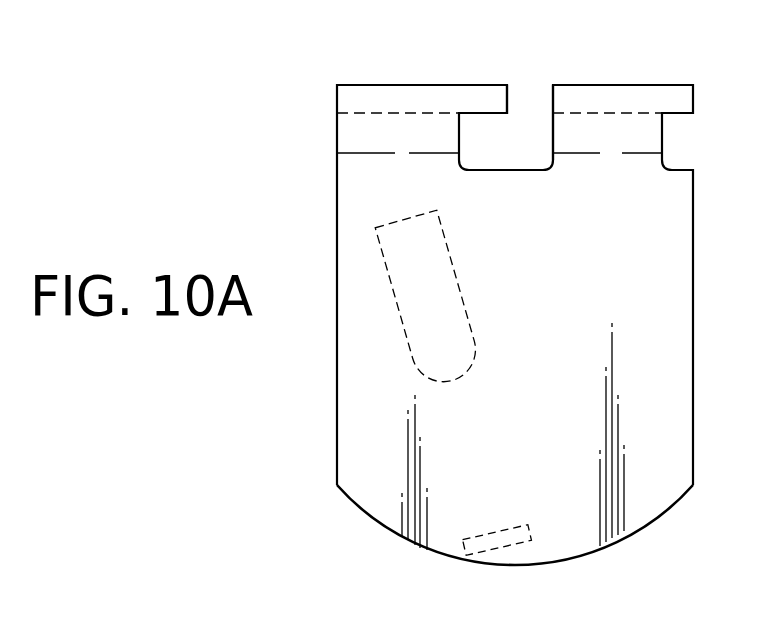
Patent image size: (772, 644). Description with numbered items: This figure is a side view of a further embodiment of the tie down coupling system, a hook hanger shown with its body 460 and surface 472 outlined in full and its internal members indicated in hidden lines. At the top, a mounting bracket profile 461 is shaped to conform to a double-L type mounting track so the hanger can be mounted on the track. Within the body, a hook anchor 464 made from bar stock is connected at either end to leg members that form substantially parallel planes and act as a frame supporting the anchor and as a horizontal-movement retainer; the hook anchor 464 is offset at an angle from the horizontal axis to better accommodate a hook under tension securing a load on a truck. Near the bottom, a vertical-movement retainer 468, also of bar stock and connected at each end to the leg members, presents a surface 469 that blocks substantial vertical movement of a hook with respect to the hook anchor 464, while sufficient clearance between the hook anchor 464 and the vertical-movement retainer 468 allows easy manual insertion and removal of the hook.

The spoon-shaped shell body 460 is at (337, 413).
The mounting bracket profile 461 is at (524, 93).
The hook anchor 464 is at (397, 220).
The vertical-movement retainer 468 is at (530, 531).
The surface 469 is at (474, 533).
The surface of body 472 is at (570, 289).